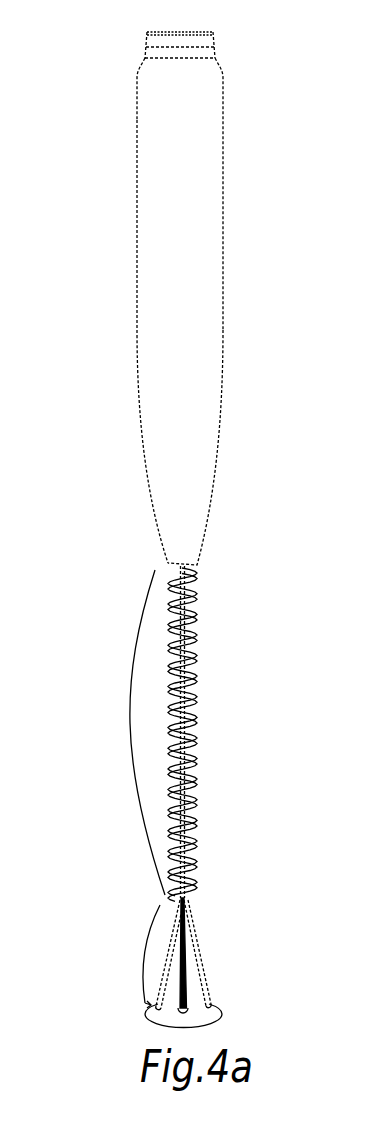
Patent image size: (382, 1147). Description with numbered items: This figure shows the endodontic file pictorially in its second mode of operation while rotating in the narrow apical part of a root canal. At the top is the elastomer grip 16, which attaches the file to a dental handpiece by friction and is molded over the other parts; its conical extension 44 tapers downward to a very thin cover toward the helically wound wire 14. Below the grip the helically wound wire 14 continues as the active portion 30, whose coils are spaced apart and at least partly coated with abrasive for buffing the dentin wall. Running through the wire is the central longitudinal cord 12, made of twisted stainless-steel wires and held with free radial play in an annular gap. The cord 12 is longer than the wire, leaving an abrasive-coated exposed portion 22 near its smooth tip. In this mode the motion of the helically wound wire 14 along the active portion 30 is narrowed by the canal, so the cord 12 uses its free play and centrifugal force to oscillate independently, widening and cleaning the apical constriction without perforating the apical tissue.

The elastomer grip 16 is at (223, 187).
The conical extension 44 is at (216, 467).
The helically wound wire 14 is at (193, 752).
The active portion 30 is at (132, 765).
The central longitudinal cord 12 is at (202, 965).
The exposed portion 22 is at (142, 968).